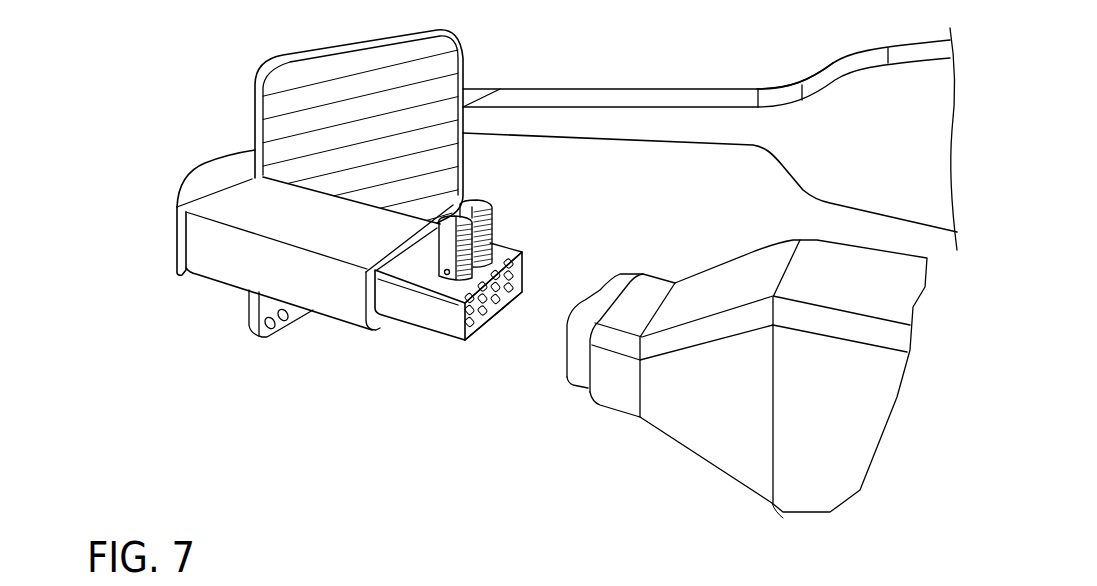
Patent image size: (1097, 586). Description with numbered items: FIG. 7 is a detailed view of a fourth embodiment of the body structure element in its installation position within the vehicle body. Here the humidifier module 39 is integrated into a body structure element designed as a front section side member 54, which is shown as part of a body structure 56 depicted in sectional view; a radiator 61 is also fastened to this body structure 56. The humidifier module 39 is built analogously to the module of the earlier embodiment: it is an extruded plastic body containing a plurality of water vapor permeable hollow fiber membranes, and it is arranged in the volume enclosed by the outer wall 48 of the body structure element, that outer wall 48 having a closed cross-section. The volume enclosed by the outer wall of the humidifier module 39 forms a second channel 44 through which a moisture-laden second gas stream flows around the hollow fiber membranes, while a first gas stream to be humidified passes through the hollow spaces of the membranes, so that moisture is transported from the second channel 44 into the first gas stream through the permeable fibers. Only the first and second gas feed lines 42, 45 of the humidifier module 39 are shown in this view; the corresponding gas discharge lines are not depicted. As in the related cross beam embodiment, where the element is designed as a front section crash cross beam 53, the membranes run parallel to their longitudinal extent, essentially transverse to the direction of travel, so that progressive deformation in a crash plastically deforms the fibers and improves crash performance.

The humidifier module 39 is at (423, 328).
The first gas feed line 42 is at (492, 208).
The second channel 44 is at (522, 252).
The second gas feed line 45 is at (447, 275).
The outer wall 48 is at (373, 323).
The front section crash cross beam 53 is at (230, 155).
The front section side member 54 is at (568, 89).
The body structure 56 is at (810, 50).
The radiator 61 is at (267, 68).